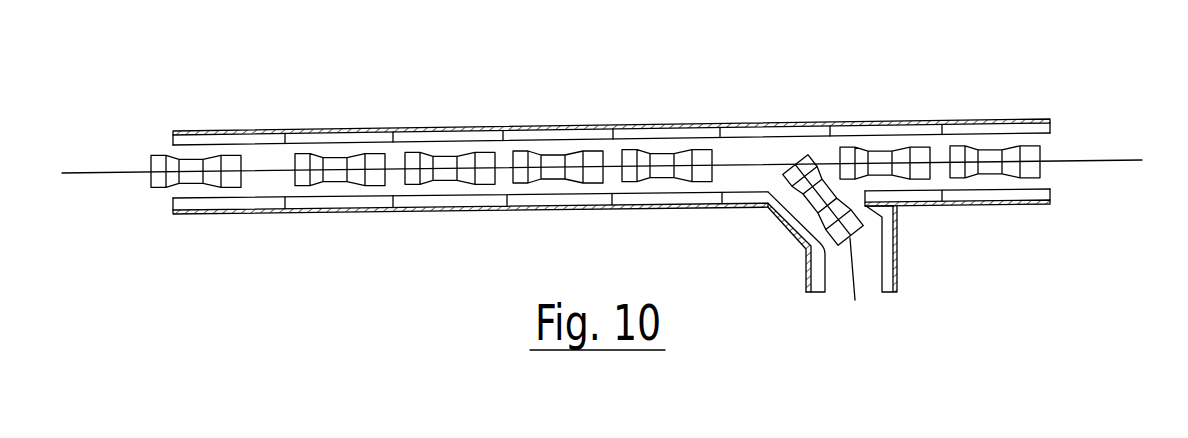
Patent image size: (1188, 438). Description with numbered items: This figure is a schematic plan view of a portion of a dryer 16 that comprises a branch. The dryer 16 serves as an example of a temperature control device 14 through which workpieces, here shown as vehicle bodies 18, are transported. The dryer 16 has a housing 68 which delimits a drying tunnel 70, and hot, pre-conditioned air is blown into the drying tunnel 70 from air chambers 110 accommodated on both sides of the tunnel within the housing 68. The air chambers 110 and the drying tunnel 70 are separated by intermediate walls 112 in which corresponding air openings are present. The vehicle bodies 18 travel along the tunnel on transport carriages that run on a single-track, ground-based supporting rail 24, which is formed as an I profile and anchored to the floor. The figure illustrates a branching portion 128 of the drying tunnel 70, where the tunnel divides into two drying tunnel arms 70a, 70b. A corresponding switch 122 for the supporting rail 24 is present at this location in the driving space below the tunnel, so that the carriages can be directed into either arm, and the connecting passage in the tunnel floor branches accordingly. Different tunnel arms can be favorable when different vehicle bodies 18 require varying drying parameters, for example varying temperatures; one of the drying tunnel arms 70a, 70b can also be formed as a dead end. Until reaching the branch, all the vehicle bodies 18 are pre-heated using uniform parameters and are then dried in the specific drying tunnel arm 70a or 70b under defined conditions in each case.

The temperature control device 14 is at (850, 80).
The dryer 16 is at (899, 106).
The vehicle body 18 is at (345, 250).
The supporting rail 24 is at (77, 172).
The housing 68 is at (386, 129).
The drying tunnel 70 is at (733, 158).
The drying tunnel arm 70a is at (1030, 143).
The drying tunnel arm 70b is at (886, 318).
The air chamber 110 is at (483, 83).
The intermediate wall 112 is at (420, 82).
The switch 122 is at (764, 176).
The branching portion 128 is at (283, 92).